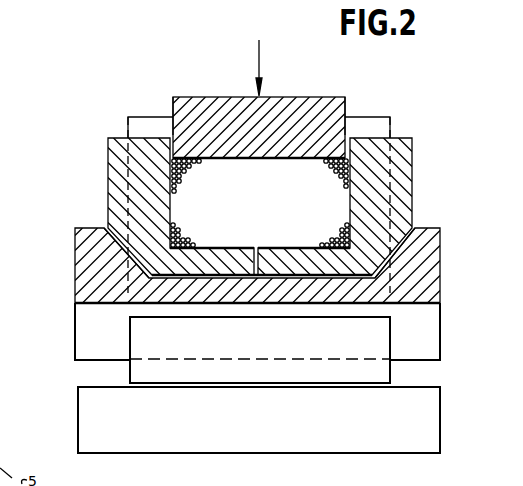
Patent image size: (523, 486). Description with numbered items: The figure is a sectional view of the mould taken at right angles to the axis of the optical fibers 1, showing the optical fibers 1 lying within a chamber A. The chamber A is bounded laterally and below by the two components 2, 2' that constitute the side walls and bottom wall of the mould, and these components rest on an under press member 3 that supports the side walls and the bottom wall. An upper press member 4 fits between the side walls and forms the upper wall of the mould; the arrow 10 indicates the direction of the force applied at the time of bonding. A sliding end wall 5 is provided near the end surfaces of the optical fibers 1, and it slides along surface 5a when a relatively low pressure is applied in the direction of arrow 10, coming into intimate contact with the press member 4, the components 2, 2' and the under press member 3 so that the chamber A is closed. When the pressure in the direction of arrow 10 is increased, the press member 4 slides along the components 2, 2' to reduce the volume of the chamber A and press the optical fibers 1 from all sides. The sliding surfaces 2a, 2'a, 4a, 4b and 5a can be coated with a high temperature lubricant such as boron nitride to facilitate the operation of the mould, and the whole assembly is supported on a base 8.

The optical fibers 1 is at (170, 172).
The side wall and bottom wall component 2 is at (164, 206).
The sliding surface 2a is at (132, 246).
The side wall and bottom wall component 2' is at (351, 206).
The sliding surface 2'a is at (426, 256).
The under press member 3 is at (440, 243).
The upper press member 4 is at (245, 97).
The sliding surface 4a is at (342, 117).
The sliding surface 4b is at (177, 119).
The sliding end wall 5 is at (133, 122).
The sliding surface 5a is at (289, 386).
The base 8 is at (78, 410).
The arrow 10 is at (260, 50).
The chamber A is at (338, 193).